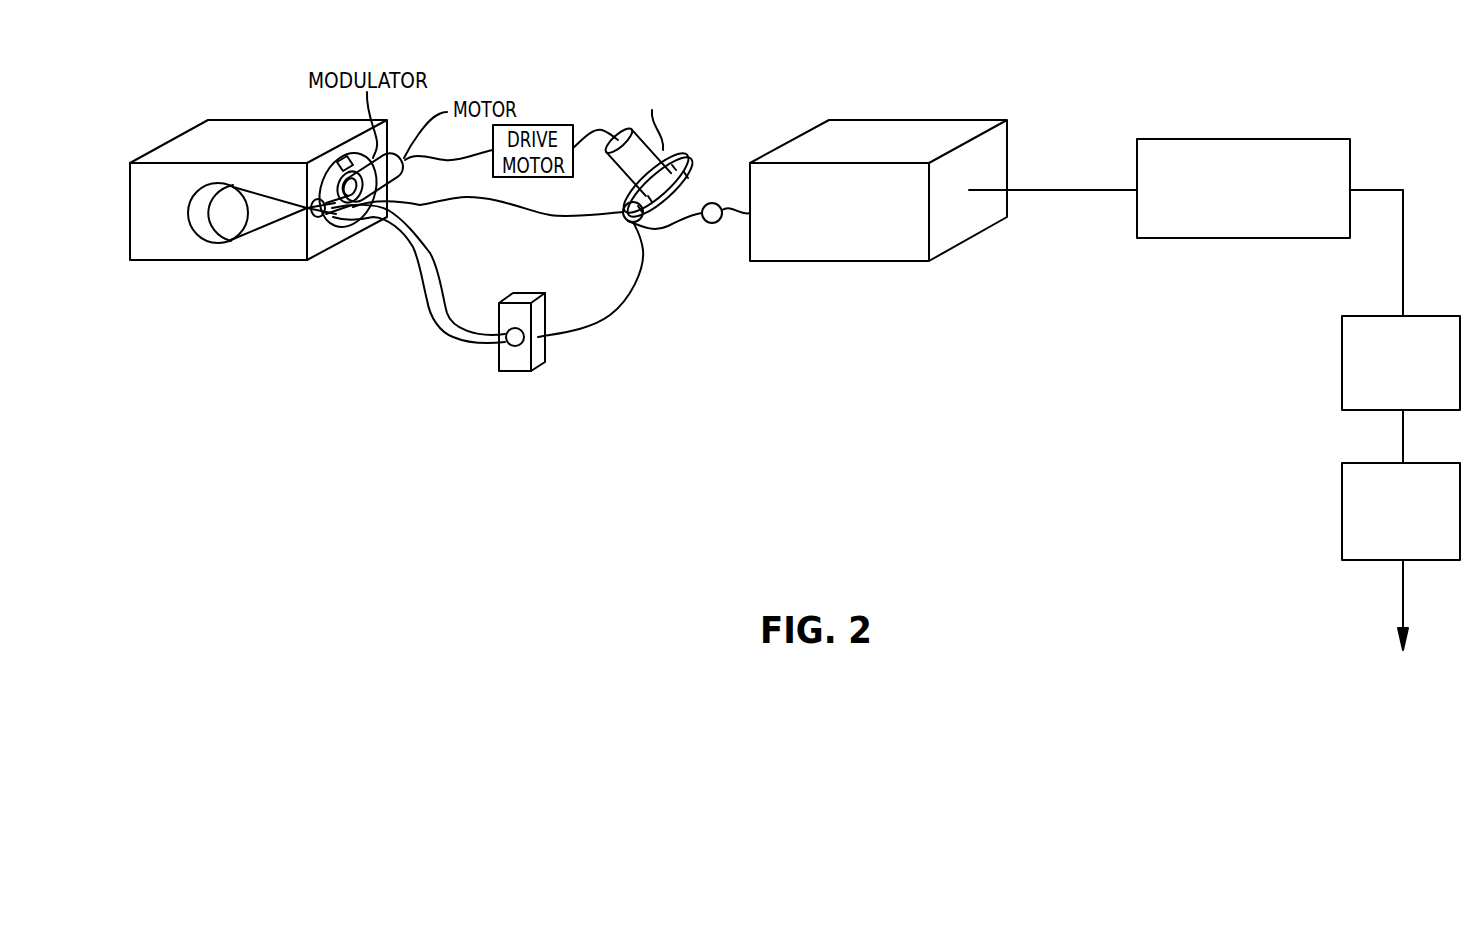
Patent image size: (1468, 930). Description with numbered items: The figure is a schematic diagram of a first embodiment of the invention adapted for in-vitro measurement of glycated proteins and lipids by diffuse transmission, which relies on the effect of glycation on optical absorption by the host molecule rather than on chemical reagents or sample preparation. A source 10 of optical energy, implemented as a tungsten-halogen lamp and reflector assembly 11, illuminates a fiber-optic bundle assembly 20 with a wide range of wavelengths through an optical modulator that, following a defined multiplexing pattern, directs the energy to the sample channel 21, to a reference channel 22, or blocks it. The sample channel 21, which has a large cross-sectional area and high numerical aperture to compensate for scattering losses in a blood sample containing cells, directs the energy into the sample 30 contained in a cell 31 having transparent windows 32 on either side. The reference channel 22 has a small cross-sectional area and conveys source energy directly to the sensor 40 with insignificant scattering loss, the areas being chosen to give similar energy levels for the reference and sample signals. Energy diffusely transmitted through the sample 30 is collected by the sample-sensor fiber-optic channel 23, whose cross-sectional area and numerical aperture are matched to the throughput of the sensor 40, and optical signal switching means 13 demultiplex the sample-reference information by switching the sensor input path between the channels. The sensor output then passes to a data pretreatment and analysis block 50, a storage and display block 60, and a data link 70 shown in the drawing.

The source 10 is at (218, 262).
The tungsten-halogen lamp and reflector assembly 11 is at (200, 198).
The optical signal switching means 13 is at (688, 177).
The fiber-optic bundle assembly 20 is at (391, 233).
The sample channel 21 is at (435, 252).
The reference channel 22 is at (539, 215).
The sample-sensor fiber-optic channel 23 is at (634, 297).
The sample 30 is at (514, 373).
The cell 31 is at (545, 310).
The transparent windows 32 is at (499, 352).
The sensor 40 is at (838, 263).
The data pretreatment and analysis unit 50 is at (1289, 139).
The storage and display unit 60 is at (1430, 316).
The data link 70 is at (1432, 463).